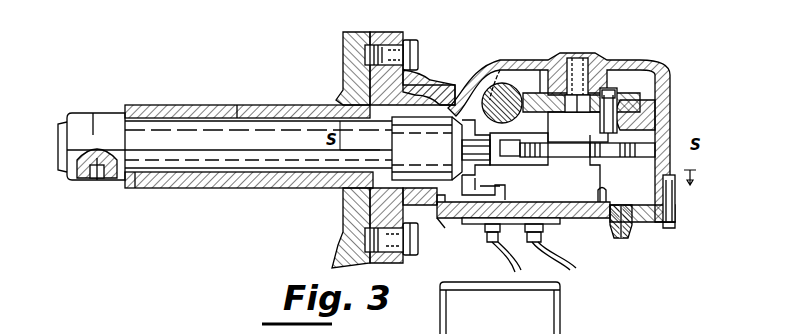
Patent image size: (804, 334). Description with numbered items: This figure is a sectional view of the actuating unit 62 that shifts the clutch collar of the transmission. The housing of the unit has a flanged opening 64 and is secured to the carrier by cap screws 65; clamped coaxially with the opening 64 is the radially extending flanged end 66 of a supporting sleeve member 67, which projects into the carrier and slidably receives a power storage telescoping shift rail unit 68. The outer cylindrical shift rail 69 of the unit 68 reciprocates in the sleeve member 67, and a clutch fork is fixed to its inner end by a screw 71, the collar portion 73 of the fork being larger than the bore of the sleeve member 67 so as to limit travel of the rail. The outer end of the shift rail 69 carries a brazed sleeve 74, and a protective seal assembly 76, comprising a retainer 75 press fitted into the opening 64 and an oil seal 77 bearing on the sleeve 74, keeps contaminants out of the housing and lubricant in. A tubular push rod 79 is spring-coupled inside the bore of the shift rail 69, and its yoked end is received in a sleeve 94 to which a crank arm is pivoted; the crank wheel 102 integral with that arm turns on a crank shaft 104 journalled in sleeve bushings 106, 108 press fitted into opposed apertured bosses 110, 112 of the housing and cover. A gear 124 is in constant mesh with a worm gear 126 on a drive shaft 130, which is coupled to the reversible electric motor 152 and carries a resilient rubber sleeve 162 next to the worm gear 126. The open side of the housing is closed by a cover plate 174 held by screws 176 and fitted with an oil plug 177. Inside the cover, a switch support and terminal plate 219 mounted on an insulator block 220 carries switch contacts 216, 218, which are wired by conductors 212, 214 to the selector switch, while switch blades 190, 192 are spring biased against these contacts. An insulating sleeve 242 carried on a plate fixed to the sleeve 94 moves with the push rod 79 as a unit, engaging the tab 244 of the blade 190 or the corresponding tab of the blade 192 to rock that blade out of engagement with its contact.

The actuating unit 62 is at (676, 57).
The flanged opening 64 is at (412, 68).
The cap screws 65 is at (419, 52).
The flanged end 66 is at (376, 45).
The supporting sleeve member 67 is at (228, 112).
The power storage telescoping shift rail unit 68 is at (240, 112).
The shift rail 69 is at (134, 188).
The screw 71 is at (104, 156).
The collar portion 73 is at (108, 120).
The sleeve 74 is at (424, 110).
The retainer 75 is at (384, 168).
The protective seal assembly 76 is at (352, 105).
The oil seal 77 is at (384, 228).
The push rod 79 is at (472, 128).
The sleeve 94 is at (532, 140).
The crank wheel 102 is at (660, 148).
The crank shaft 104 is at (588, 55).
The sleeve bushing 106 is at (573, 60).
The sleeve bushing 108 is at (560, 224).
The apertured boss 110 is at (610, 88).
The apertured boss 112 is at (604, 178).
The gear 124 is at (656, 105).
The worm gear 126 is at (505, 65).
The drive shaft 130 is at (540, 68).
The reversible electric motor 152 is at (562, 320).
The resilient rubber sleeve 162 is at (500, 83).
The cover plate 174 is at (440, 222).
The screws 176 is at (672, 228).
The oil plug 177 is at (625, 238).
The switch blade 190 is at (523, 209).
The switch blade 192 is at (476, 187).
The conductor 212 is at (565, 262).
The conductor 214 is at (508, 262).
The switch contact 216 is at (511, 212).
The switch contact 218 is at (476, 150).
The switch support and terminal plate 219 is at (440, 207).
The insulator block 220 is at (480, 228).
The insulating sleeve 242 is at (548, 158).
The tab 244 is at (505, 258).